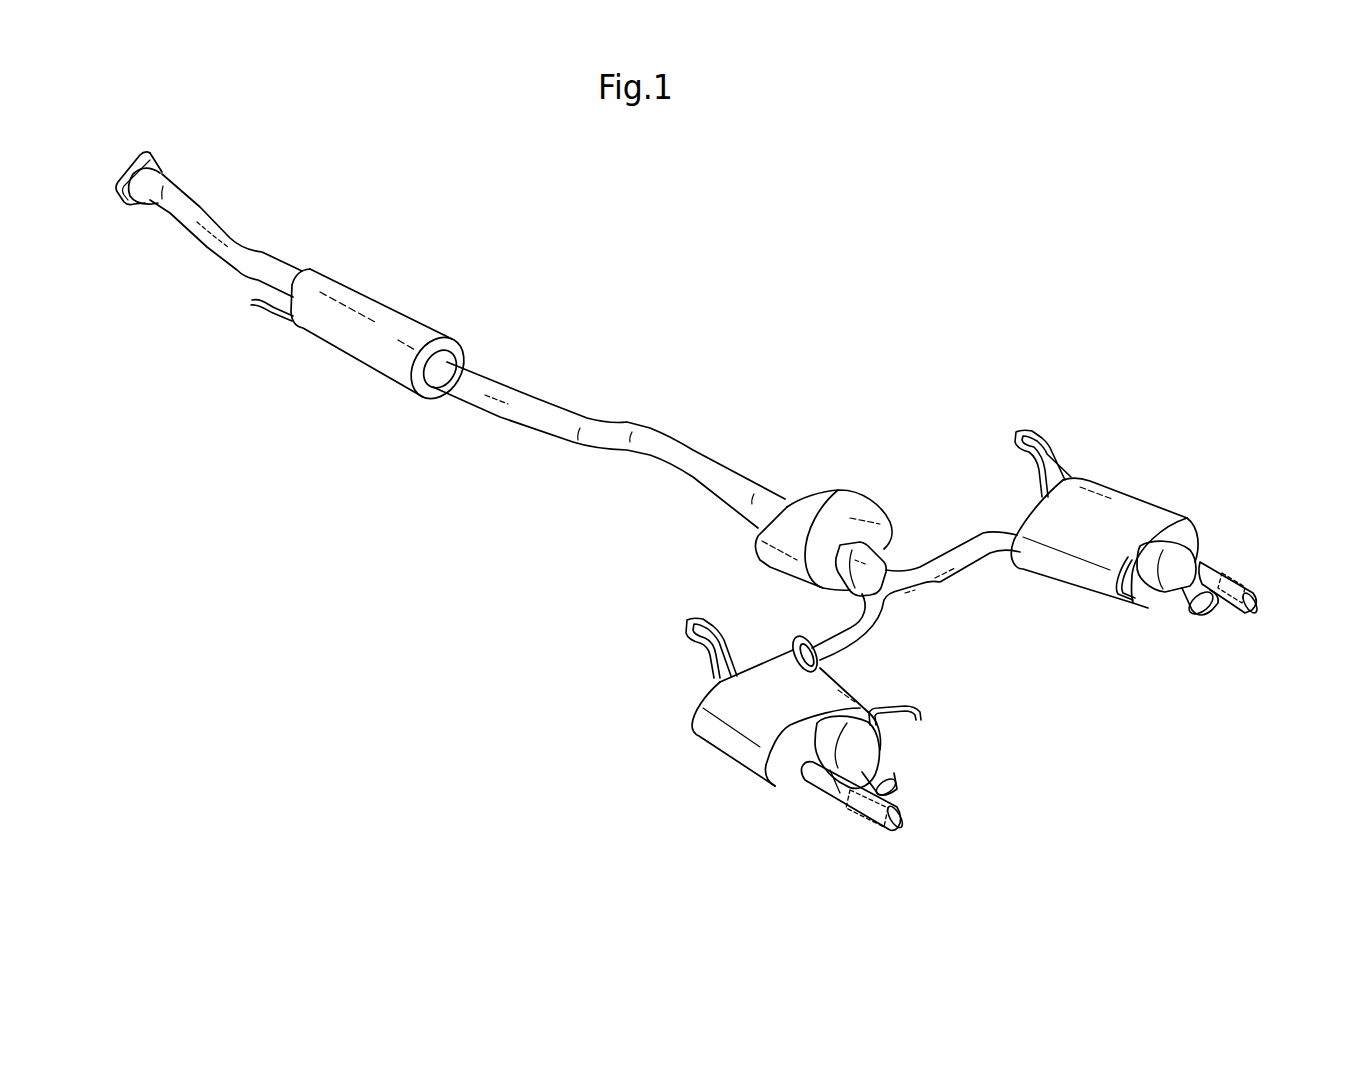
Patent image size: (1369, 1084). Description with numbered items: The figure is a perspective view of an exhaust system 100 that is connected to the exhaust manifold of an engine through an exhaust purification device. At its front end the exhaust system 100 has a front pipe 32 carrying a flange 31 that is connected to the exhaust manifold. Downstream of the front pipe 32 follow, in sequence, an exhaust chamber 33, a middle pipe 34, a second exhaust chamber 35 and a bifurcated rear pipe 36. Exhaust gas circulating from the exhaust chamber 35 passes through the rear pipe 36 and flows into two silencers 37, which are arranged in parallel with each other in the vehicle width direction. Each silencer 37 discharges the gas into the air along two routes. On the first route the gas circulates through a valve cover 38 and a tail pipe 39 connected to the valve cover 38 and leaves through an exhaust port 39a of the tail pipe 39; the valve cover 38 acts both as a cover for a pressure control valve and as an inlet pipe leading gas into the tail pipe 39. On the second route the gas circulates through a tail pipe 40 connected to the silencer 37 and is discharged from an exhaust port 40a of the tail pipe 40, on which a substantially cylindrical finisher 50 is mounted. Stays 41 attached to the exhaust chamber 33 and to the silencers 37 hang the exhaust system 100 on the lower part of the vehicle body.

The exhaust system 100 is at (821, 311).
The flange 31 is at (132, 204).
The front pipe 32 is at (212, 242).
The exhaust chamber 33 is at (386, 304).
The middle pipe 34 is at (523, 428).
The exhaust chamber 35 is at (822, 489).
The bifurcated rear pipe 36 is at (967, 541).
The silencer 37 is at (1122, 502).
The valve cover 38 is at (1178, 596).
The tail pipe 39 is at (1196, 628).
The exhaust port 39a is at (1214, 620).
The tail pipe 40 is at (1218, 560).
The exhaust port 40a is at (1253, 606).
The stay 41 is at (262, 318).
The finisher 50 is at (1247, 588).